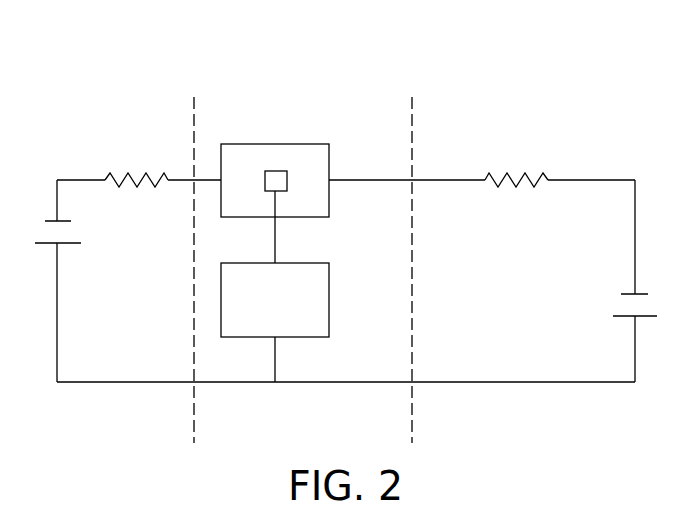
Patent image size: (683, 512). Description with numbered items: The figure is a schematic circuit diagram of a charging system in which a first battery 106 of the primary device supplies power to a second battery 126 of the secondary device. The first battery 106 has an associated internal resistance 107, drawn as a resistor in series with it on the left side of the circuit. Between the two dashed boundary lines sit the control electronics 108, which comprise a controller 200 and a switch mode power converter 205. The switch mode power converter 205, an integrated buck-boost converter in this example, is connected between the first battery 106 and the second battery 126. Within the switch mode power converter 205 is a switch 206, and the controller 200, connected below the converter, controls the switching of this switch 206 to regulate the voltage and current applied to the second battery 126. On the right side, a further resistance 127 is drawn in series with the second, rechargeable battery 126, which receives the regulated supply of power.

The control electronics 108 is at (319, 96).
The first battery 106 is at (49, 220).
The internal resistance 107 is at (128, 173).
The switch mode power converter 205 is at (331, 153).
The switch 206 is at (275, 170).
The controller 200 is at (331, 297).
The second resistor 127 is at (527, 175).
The second battery 126 is at (645, 293).